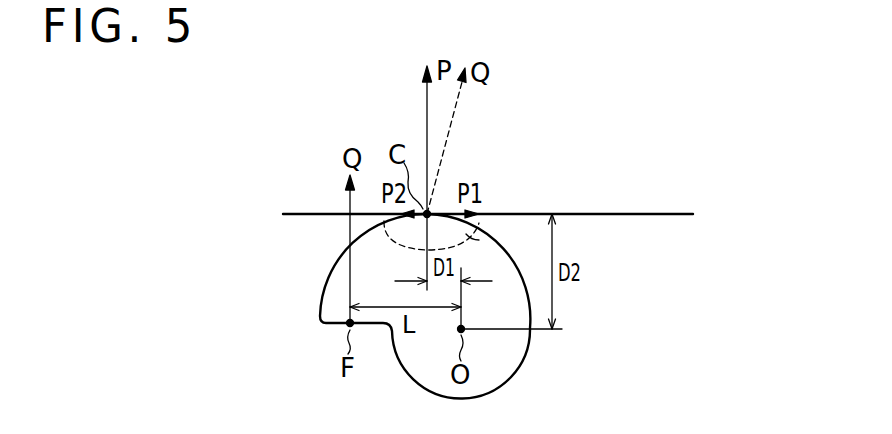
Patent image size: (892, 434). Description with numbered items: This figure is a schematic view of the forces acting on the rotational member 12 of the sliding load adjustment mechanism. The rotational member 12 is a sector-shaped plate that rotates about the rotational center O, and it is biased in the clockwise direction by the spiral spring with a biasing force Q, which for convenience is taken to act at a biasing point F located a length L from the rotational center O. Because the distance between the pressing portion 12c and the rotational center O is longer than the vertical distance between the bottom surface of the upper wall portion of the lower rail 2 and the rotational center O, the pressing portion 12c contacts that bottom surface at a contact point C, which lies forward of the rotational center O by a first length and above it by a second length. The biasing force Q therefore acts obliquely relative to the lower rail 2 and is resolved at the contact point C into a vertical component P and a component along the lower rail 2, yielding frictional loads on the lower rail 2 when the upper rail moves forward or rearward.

The lower rail 2 is at (513, 202).
The rotational member 12 is at (507, 363).
The pressing portion 12c is at (498, 214).